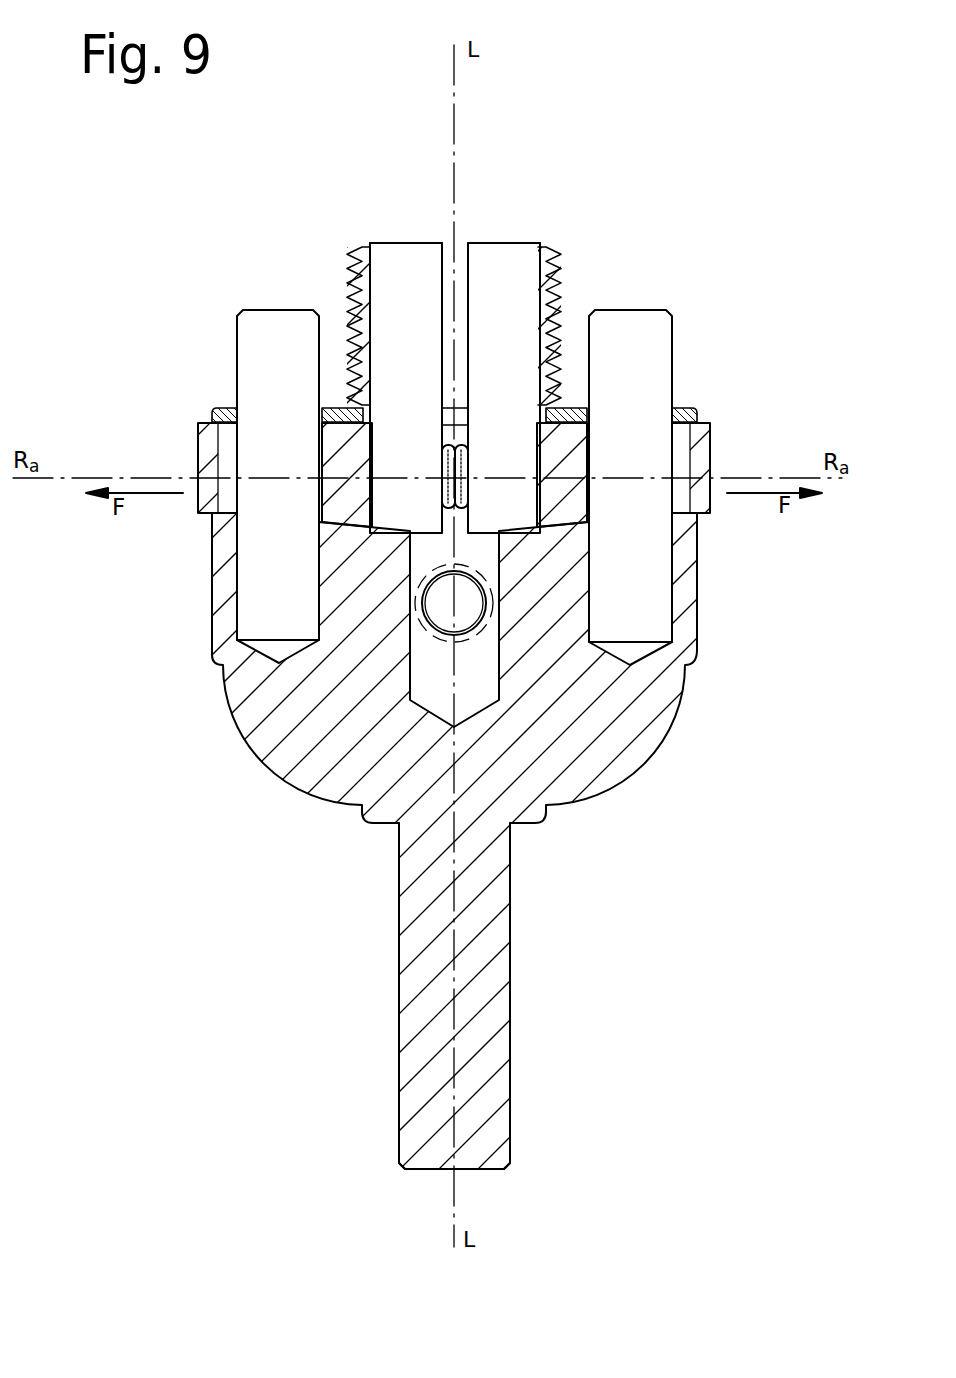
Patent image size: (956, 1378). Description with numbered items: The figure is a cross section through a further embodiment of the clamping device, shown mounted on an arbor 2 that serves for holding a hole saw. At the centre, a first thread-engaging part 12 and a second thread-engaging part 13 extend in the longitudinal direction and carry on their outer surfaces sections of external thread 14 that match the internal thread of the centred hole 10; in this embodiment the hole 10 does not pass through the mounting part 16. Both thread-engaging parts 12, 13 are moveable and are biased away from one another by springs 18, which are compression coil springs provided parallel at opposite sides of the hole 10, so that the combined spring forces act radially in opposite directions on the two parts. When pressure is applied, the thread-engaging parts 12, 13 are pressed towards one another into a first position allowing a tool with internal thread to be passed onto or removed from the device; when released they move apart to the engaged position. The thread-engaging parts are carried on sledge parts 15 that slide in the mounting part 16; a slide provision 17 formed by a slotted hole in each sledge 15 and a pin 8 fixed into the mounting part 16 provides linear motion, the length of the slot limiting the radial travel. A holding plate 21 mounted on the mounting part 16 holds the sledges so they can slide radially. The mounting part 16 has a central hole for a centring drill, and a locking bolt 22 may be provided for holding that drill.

The arbor 2 is at (478, 993).
The pin 8 is at (262, 352).
The centred hole 10 is at (507, 253).
The first thread-engaging part 12 is at (352, 248).
The second thread-engaging part 13 is at (556, 250).
The external thread 14 is at (350, 282).
The sledge part 15 is at (206, 470).
The mounting part 16 is at (337, 710).
The slide provision 17 is at (228, 504).
The spring 18 is at (468, 490).
The holding plate 21 is at (690, 416).
The locking bolt 22 is at (467, 607).